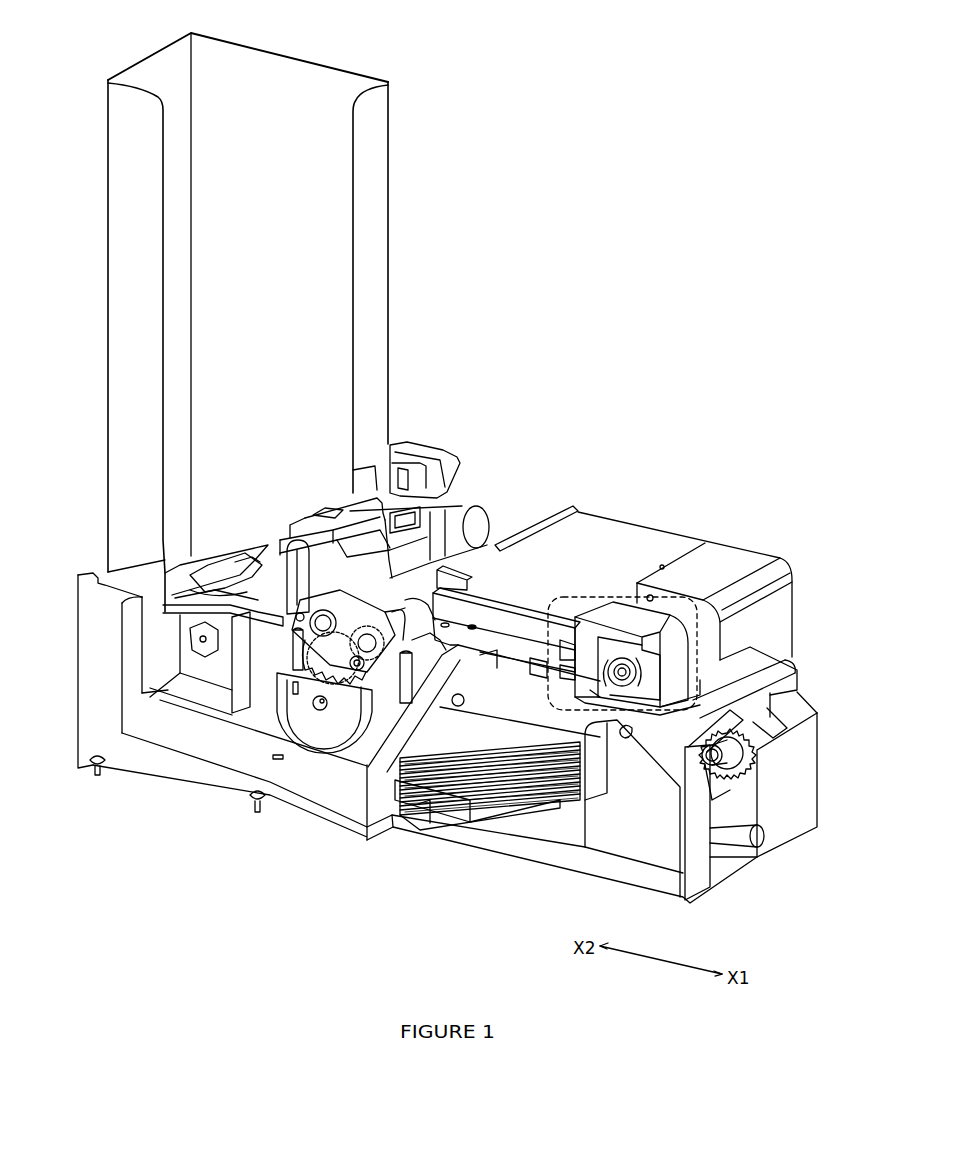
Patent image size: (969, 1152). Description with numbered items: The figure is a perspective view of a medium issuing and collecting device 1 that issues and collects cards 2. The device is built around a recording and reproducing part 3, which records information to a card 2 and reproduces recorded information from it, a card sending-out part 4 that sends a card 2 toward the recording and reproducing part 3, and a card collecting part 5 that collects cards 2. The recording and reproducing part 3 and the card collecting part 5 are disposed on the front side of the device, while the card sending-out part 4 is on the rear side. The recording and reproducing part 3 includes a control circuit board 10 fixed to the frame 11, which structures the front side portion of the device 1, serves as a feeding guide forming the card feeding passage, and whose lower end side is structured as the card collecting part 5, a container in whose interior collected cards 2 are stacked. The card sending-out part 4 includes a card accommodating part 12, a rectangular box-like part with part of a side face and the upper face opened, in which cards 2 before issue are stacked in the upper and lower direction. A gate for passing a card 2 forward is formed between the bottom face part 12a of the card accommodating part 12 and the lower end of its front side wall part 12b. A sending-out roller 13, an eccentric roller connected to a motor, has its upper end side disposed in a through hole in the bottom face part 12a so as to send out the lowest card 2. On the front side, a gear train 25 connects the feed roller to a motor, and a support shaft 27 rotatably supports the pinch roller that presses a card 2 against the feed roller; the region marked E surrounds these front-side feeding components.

The medium issuing and collecting device 1 is at (595, 57).
The card 2 is at (522, 815).
The recording and reproducing part 3 is at (654, 472).
The card sending-out part 4 is at (441, 342).
The card collecting part 5 is at (487, 833).
The control circuit board 10 is at (516, 628).
The frame 11 is at (743, 547).
The card accommodating part 12 is at (388, 192).
The bottom face part 12a is at (202, 550).
The front side wall part 12b is at (380, 380).
The sending-out roller 13 is at (228, 575).
The gear train 25 is at (747, 765).
The support shaft 27 is at (607, 688).
The region E is at (678, 592).